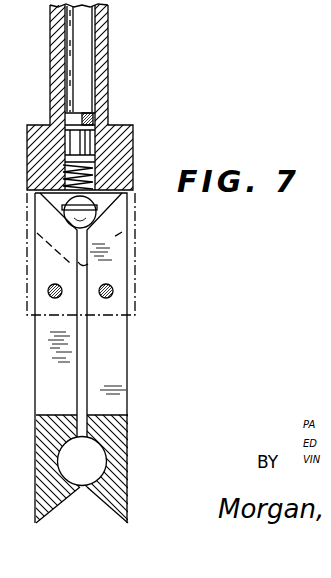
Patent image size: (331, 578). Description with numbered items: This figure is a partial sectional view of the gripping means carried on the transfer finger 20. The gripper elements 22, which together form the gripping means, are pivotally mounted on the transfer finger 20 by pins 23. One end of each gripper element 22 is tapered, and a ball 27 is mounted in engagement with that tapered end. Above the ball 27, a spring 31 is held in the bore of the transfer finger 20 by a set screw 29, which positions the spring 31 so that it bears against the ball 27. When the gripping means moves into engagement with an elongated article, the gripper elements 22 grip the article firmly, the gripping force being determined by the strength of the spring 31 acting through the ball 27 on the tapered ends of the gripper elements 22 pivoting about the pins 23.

The transfer finger 20 is at (133, 178).
The set screw 29 is at (100, 110).
The spring 31 is at (103, 170).
The gripper element 22 is at (128, 392).
The ball 27 is at (92, 215).
The pins 23 is at (113, 289).